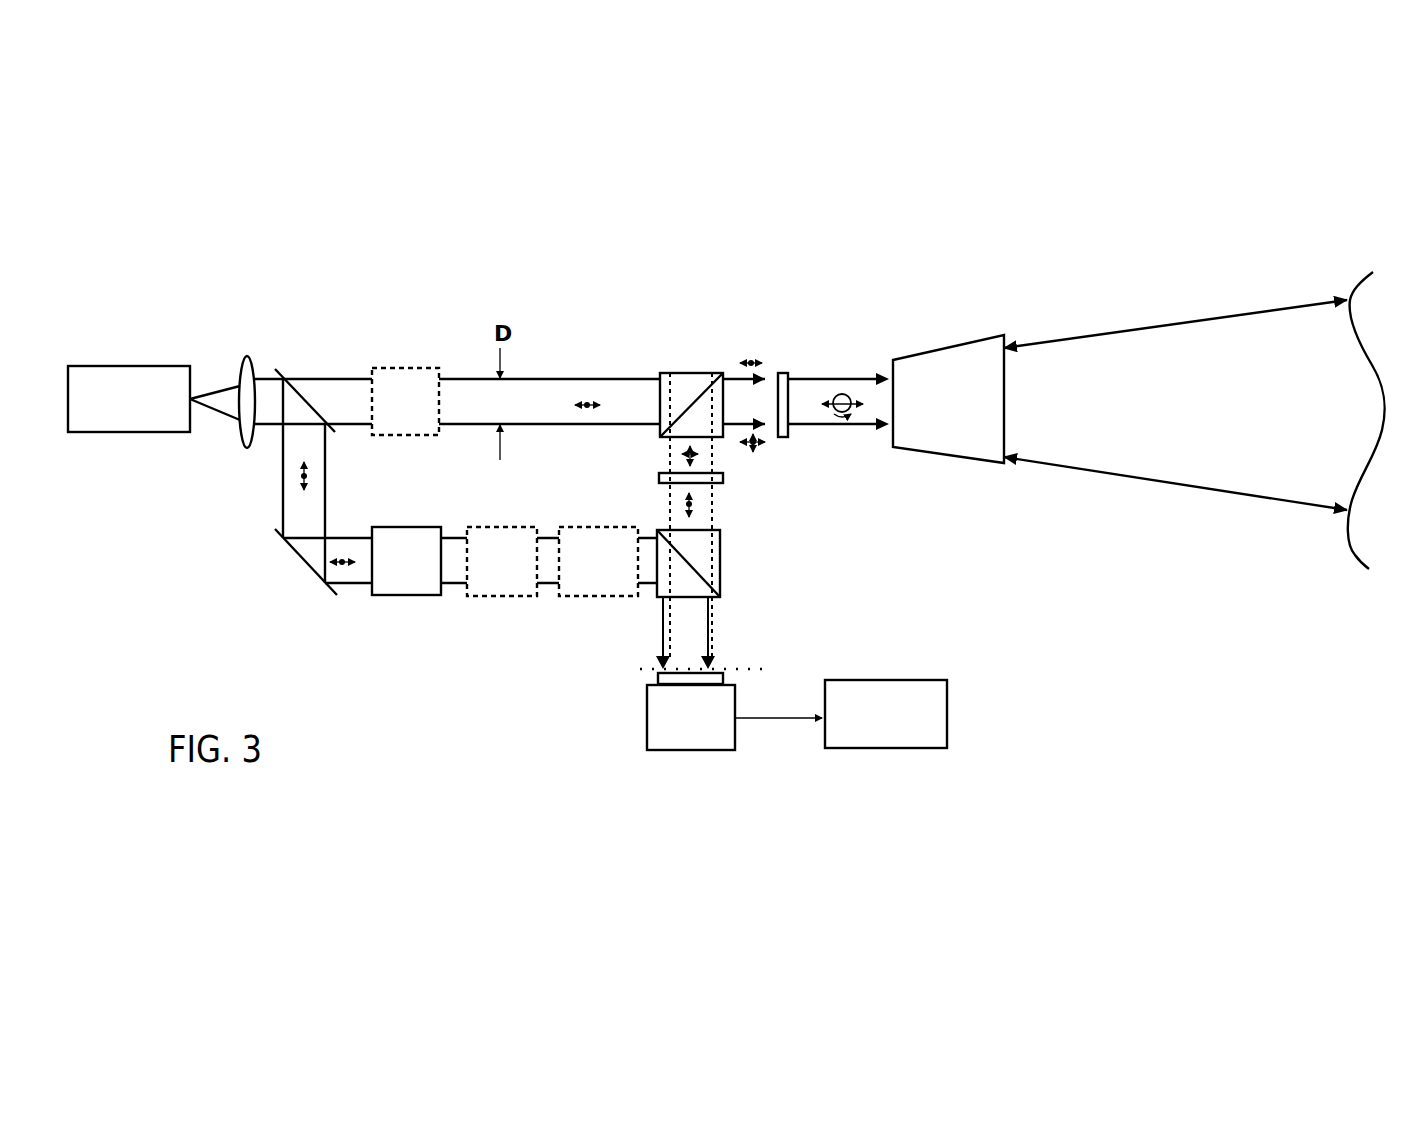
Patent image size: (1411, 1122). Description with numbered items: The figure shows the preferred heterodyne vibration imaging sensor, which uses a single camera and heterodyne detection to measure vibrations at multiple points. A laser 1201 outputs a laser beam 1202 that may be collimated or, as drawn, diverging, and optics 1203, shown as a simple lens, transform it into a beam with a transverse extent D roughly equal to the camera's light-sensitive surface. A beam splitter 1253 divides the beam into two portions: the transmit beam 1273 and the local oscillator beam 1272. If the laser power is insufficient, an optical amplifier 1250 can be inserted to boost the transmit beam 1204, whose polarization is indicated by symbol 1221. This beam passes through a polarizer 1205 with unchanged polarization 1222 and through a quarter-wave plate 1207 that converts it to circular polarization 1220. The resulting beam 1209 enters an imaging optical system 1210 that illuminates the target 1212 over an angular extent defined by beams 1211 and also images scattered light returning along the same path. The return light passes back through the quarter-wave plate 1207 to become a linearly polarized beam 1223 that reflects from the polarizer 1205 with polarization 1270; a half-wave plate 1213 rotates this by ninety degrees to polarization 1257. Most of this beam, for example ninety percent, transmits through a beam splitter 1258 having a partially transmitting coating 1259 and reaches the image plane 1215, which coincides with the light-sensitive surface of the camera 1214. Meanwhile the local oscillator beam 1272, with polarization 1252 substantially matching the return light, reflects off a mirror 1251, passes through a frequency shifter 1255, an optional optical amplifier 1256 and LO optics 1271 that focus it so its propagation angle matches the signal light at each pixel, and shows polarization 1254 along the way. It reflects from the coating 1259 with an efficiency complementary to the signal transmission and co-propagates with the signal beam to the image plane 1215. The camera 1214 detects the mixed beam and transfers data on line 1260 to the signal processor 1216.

The laser 1201 is at (95, 366).
The laser beam 1202 is at (222, 388).
The optics 1203 is at (247, 356).
The beam splitter 1253 is at (280, 372).
The transmit beam 1273 is at (325, 378).
The optical amplifier 1250 is at (400, 368).
The local oscillator beam 1272 is at (280, 451).
The polarization state symbol 1252 is at (295, 480).
The polarization state symbol 1254 is at (345, 553).
The mirror 1251 is at (278, 539).
The frequency shifter 1255 is at (412, 598).
The optical amplifier 1256 is at (504, 598).
The LO optics 1271 is at (590, 598).
The polarization symbol 1221 is at (592, 395).
The transmit beam 1204 is at (638, 380).
The polarizer 1205 is at (690, 372).
The polarization symbol 1222 is at (755, 351).
The quarter-wave plate 1207 is at (790, 370).
The resulting beam 1209 is at (866, 380).
The circular polarization symbol 1220 is at (848, 418).
The linearly polarized beam 1223 is at (760, 448).
The imaging optical system 1210 is at (930, 350).
The beams 1211 is at (1165, 332).
The target 1212 is at (1348, 545).
The polarization symbol 1270 is at (697, 458).
The half-wave plate 1213 is at (722, 483).
The polarization symbol 1257 is at (700, 510).
The partially transmitting coating 1259 is at (697, 567).
The beam splitter 1258 is at (722, 588).
The image plane 1215 is at (672, 673).
The camera 1214 is at (645, 725).
The line 1260 is at (768, 723).
The signal processor 1216 is at (835, 750).